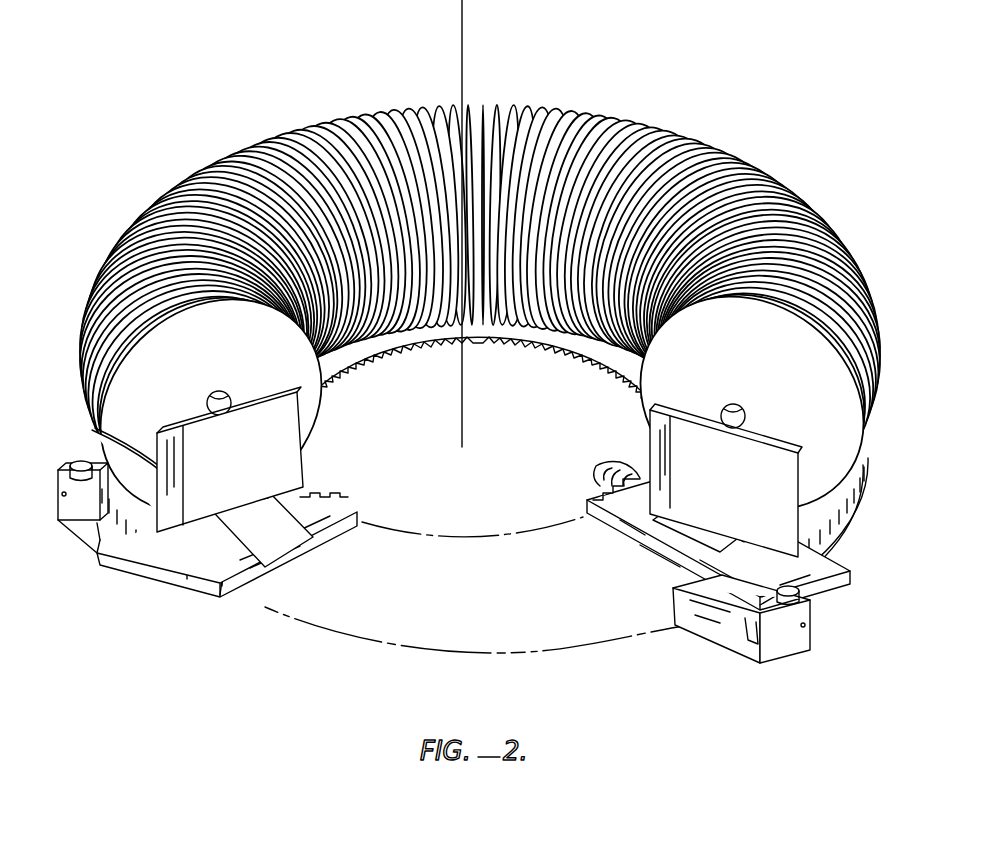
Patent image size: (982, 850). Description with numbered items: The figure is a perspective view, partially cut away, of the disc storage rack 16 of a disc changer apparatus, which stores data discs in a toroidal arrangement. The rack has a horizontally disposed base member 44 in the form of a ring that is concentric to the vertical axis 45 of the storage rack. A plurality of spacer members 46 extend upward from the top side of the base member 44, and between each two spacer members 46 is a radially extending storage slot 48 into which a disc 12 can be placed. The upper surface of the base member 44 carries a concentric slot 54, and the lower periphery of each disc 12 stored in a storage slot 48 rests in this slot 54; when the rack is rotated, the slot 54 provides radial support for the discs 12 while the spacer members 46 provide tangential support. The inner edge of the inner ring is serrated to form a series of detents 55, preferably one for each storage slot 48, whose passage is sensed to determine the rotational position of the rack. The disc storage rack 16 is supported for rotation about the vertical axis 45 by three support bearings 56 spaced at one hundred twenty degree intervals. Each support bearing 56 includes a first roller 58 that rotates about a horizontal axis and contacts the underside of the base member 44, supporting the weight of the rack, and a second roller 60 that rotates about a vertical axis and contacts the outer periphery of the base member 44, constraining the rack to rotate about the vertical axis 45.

The disc 12 is at (200, 372).
The disc storage rack 16 is at (848, 521).
The base member 44 is at (612, 541).
The vertical axis 45 is at (462, 395).
The spacer member 46 is at (270, 460).
The storage slot 48 is at (806, 548).
The slot 54 is at (283, 537).
The detents 55 is at (348, 497).
The support bearing 56 is at (104, 550).
The first roller 58 is at (97, 523).
The second roller 60 is at (72, 464).